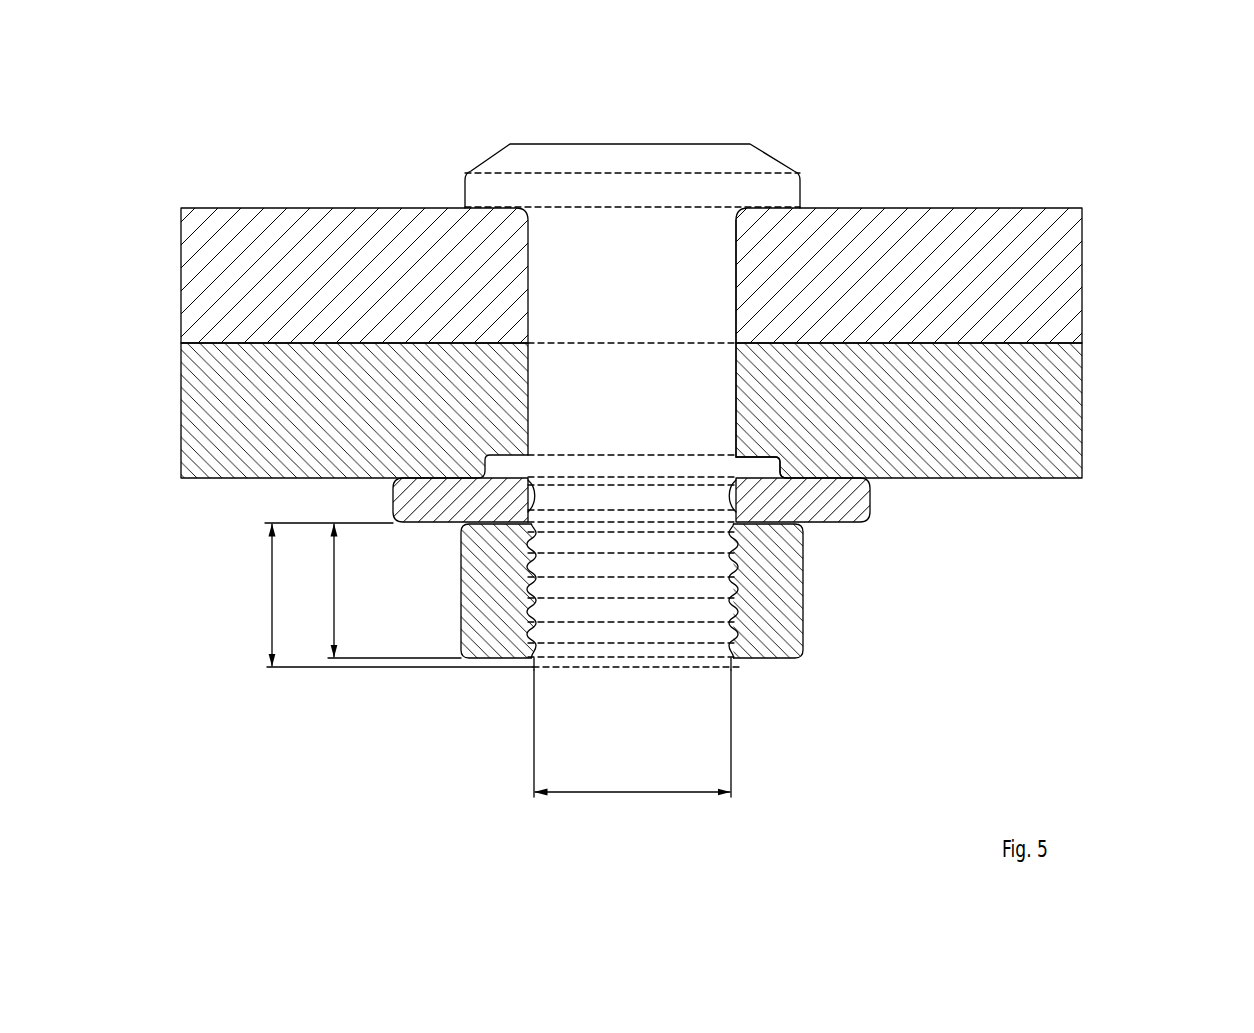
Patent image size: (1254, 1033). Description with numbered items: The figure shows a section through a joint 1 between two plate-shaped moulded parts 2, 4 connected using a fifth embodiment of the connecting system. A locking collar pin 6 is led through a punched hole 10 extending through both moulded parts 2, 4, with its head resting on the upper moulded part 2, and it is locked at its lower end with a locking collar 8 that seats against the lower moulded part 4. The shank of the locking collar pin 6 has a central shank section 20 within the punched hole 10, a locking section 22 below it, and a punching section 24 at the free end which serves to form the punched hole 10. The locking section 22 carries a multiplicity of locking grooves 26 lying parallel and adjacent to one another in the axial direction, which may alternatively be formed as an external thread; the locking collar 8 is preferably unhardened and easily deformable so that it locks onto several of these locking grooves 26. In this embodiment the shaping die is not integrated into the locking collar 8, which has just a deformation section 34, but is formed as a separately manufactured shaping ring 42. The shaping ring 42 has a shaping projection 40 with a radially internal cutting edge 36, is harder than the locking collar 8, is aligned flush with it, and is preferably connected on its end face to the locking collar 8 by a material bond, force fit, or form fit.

The joint 1 is at (279, 117).
The moulded part 2 is at (717, 237).
The moulded part 4 is at (717, 353).
The locking collar pin 6 is at (799, 175).
The locking collar 8 is at (857, 589).
The punched hole 10 is at (742, 307).
The central shank section 20 is at (737, 367).
The locking section 22 is at (737, 564).
The punching section 24 is at (737, 670).
The locking grooves 26 is at (705, 589).
The deformation section 34 is at (780, 646).
The cutting edge 36 is at (742, 451).
The shaping projection 40 is at (754, 467).
The shaping ring 42 is at (851, 506).